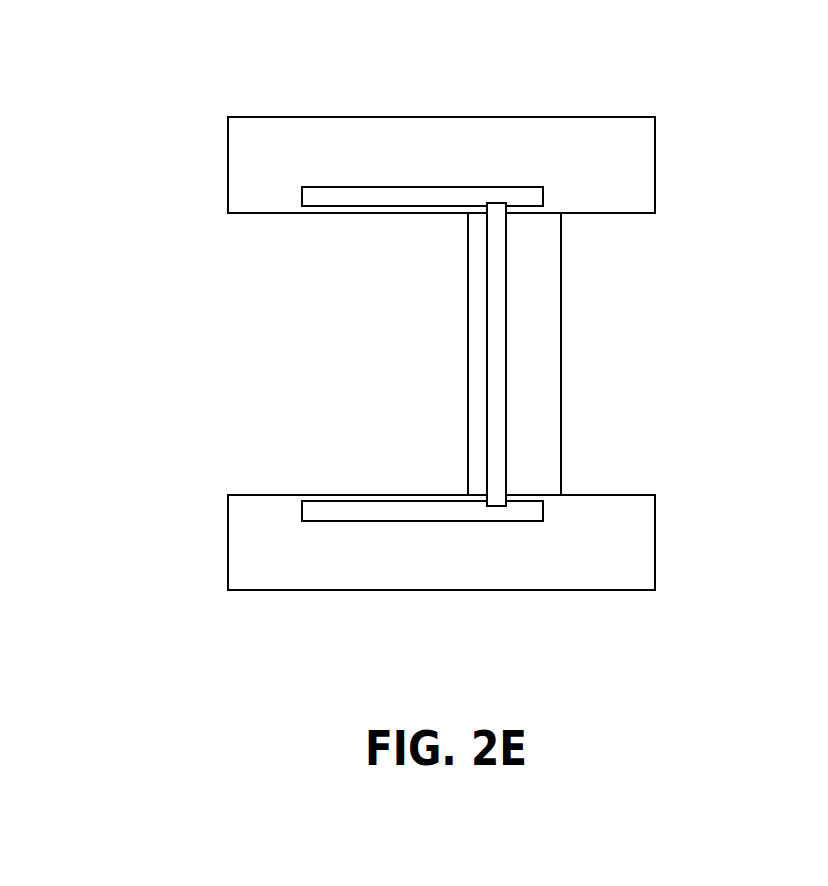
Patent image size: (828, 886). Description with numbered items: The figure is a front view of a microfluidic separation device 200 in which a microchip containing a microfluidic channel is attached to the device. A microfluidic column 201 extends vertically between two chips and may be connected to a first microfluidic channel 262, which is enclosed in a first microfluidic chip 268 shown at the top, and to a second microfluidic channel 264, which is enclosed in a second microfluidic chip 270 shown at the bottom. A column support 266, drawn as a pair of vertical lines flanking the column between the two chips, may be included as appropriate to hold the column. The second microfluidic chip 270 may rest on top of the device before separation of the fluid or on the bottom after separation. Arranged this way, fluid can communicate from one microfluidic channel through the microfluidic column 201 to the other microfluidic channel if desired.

The microfluidic separation device 200 is at (188, 118).
The microfluidic column 201 is at (487, 307).
The first microfluidic channel 262 is at (508, 190).
The second microfluidic channel 264 is at (452, 514).
The column support 266 is at (560, 327).
The first microfluidic chip 268 is at (393, 117).
The second microfluidic chip 270 is at (228, 532).